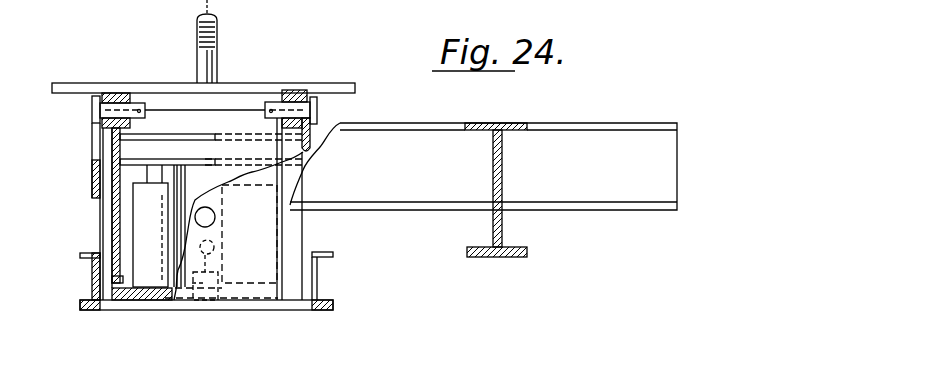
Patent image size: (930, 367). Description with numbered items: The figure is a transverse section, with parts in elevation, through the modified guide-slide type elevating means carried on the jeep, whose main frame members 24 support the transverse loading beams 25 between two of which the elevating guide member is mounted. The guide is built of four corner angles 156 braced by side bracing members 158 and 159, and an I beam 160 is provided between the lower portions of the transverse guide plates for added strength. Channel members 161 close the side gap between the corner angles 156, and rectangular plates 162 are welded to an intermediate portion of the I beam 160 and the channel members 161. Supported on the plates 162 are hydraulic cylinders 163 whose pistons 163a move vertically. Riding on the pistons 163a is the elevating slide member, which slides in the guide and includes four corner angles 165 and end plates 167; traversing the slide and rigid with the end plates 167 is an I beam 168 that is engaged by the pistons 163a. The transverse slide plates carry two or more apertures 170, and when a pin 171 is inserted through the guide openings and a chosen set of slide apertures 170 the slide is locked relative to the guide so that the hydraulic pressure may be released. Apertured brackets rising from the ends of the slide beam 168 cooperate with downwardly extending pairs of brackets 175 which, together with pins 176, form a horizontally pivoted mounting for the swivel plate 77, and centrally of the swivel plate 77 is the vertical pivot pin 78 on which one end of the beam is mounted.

The main frame member 24 is at (507, 123).
The transverse loading beam 25 is at (633, 125).
The swivel plate 77 is at (233, 82).
The vertical pivot pin 78 is at (214, 34).
The corner angle 156 is at (104, 209).
The side bracing member 158 is at (91, 179).
The side bracing member 159 is at (94, 140).
The I beam 160 is at (224, 272).
The channel member 161 is at (90, 258).
The rectangular plate 162 is at (150, 292).
The hydraulic cylinder 163 is at (165, 239).
The piston 163a is at (180, 155).
The corner angle 165 is at (114, 227).
The end plate 167 is at (118, 212).
The I beam 168 is at (155, 170).
The aperture 170 is at (218, 247).
The pin 171 is at (215, 218).
The bracket 175 is at (287, 96).
The pin 176 is at (113, 108).